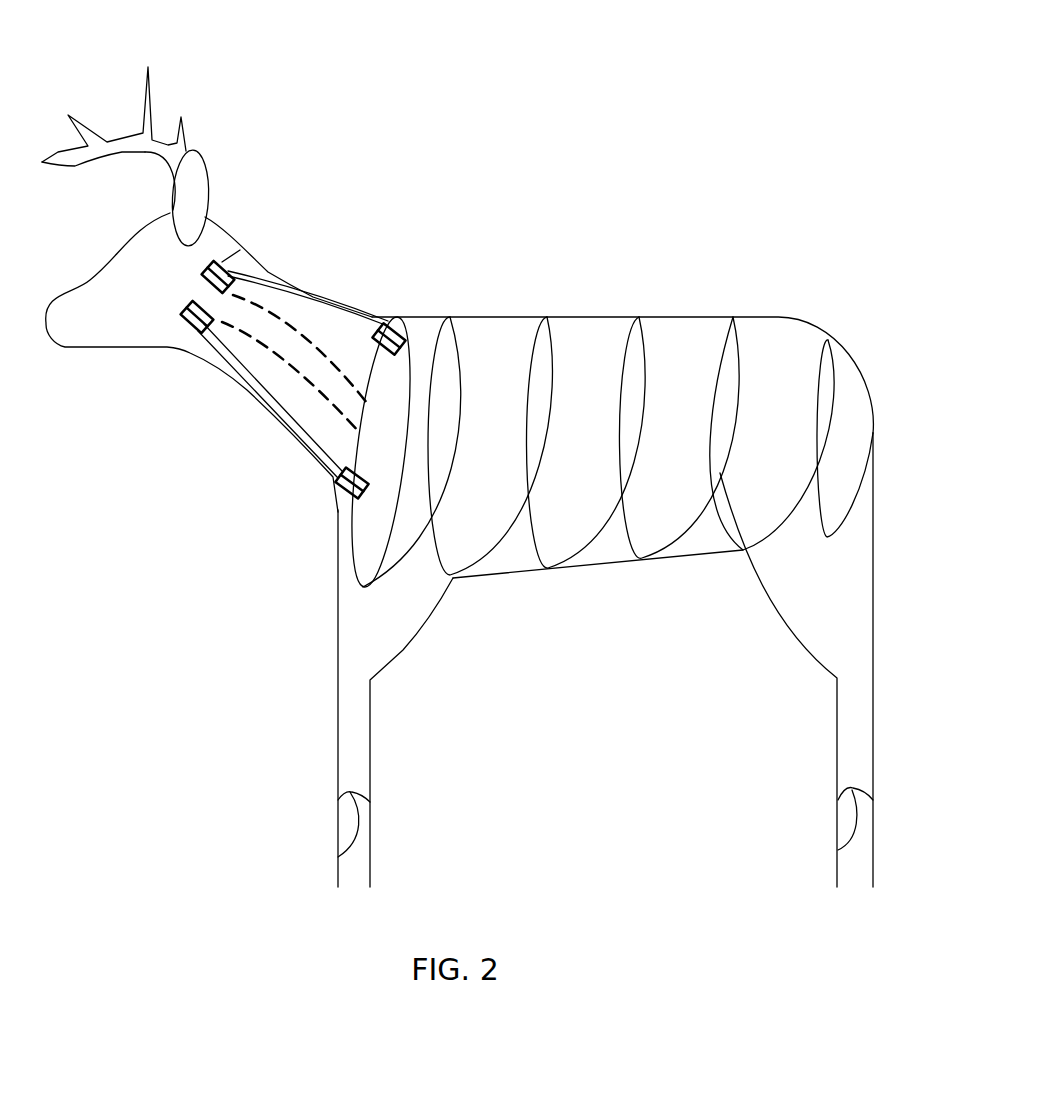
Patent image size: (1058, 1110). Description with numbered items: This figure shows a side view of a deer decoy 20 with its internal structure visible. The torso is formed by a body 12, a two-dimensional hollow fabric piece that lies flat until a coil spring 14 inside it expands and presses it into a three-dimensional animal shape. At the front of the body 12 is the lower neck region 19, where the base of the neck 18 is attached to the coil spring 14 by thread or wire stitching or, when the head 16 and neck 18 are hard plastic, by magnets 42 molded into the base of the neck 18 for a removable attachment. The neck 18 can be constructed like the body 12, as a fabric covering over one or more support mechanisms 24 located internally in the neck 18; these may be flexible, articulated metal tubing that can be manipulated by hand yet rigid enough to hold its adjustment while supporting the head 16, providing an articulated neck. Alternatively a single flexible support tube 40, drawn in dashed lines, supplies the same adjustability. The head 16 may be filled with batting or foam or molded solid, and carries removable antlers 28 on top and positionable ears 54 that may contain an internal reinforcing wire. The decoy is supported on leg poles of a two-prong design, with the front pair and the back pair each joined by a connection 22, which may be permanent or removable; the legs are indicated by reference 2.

The legs 2 is at (338, 765).
The body 12 is at (521, 316).
The coil spring 14 is at (718, 347).
The head 16 is at (167, 302).
The neck 18 is at (260, 368).
The lower neck region 19 is at (372, 316).
The deer decoy 20 is at (690, 81).
The connection 22 is at (338, 857).
The support mechanisms 24 is at (261, 280).
The antlers 28 is at (159, 150).
The flexible support tube 40 is at (310, 343).
The magnets 42 is at (215, 258).
The ears 54 is at (200, 157).